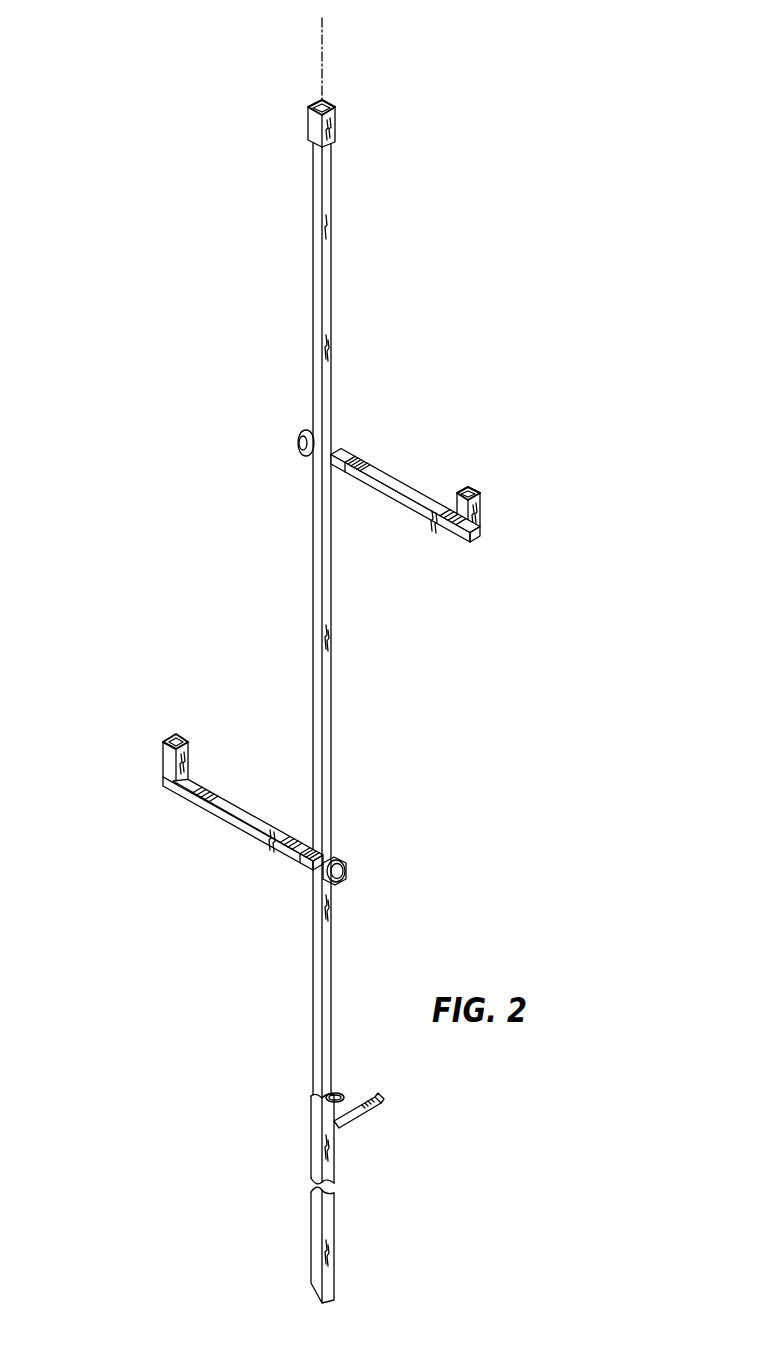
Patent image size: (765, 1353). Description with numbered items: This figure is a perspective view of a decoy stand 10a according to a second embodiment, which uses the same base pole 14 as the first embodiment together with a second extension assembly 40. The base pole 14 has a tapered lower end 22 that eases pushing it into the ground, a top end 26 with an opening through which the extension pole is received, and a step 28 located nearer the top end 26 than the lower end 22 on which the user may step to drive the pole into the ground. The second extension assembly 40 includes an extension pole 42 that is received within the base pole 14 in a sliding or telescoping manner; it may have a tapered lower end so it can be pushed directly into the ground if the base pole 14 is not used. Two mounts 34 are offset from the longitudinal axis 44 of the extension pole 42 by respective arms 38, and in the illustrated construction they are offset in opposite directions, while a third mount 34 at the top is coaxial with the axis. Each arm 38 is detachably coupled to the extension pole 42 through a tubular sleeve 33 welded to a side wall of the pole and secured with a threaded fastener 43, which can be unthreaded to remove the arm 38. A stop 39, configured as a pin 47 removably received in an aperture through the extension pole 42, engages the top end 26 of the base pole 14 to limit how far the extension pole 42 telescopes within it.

The decoy stand 10a is at (80, 484).
The base pole 14 is at (335, 1165).
The tapered lower end 22 is at (336, 1300).
The top end 26 is at (320, 1092).
The step 28 is at (377, 1111).
The tubular sleeve 33 is at (340, 448).
The mount 34 is at (312, 128).
The arm 38 is at (390, 478).
The stop 39 is at (347, 1079).
The second extension assembly 40 is at (360, 360).
The extension pole 42 is at (326, 720).
The threaded fastener 43 is at (300, 438).
The longitudinal axis 44 is at (323, 76).
The pin 47 is at (337, 1093).